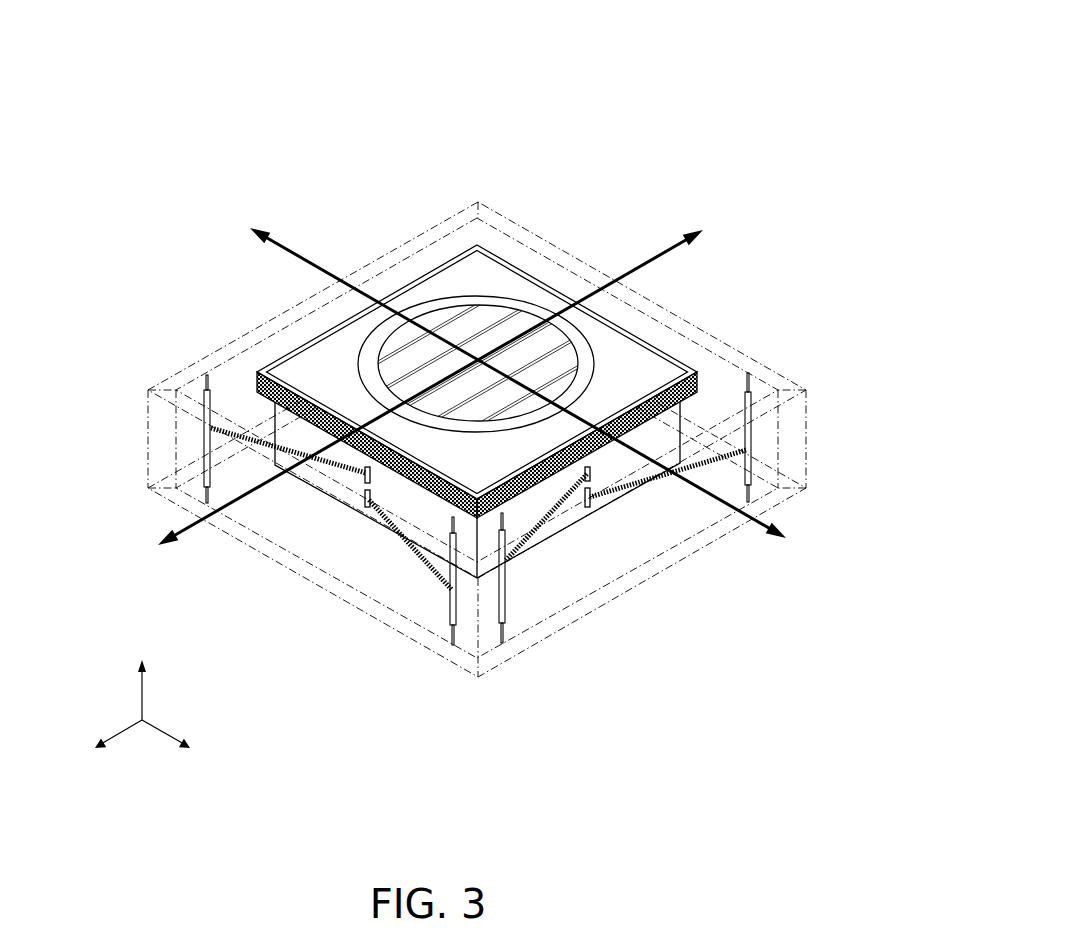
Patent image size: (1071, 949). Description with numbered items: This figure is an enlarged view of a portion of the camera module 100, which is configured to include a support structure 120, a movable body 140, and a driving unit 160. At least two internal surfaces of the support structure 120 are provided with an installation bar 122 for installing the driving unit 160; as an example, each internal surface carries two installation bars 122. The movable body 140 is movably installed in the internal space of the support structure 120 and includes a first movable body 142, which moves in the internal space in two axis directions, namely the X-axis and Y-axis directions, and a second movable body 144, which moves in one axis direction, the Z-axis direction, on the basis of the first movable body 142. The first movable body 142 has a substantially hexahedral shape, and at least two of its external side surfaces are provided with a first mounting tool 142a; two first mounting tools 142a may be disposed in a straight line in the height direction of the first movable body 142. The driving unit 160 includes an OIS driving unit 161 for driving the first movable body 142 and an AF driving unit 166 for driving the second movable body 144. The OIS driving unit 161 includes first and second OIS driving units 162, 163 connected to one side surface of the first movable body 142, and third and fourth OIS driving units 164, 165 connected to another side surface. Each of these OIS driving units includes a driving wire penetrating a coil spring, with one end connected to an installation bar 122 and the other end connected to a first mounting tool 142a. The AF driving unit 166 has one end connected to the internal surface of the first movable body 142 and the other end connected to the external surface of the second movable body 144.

The camera module 100 is at (359, 106).
The support structure 120 is at (518, 226).
The installation bar 122 is at (746, 388).
The movable body 140 is at (407, 272).
The first movable body 142 is at (280, 423).
The first mounting tool 142a is at (593, 508).
The second movable body 144 is at (373, 340).
The driving unit 160 is at (660, 47).
The OIS driving unit 161 is at (718, 5).
The first OIS driving unit 162 is at (698, 586).
The second OIS driving unit 163 is at (560, 651).
The third OIS driving unit 164 is at (383, 651).
The fourth OIS driving unit 165 is at (313, 651).
The AF driving unit 166 is at (683, 121).